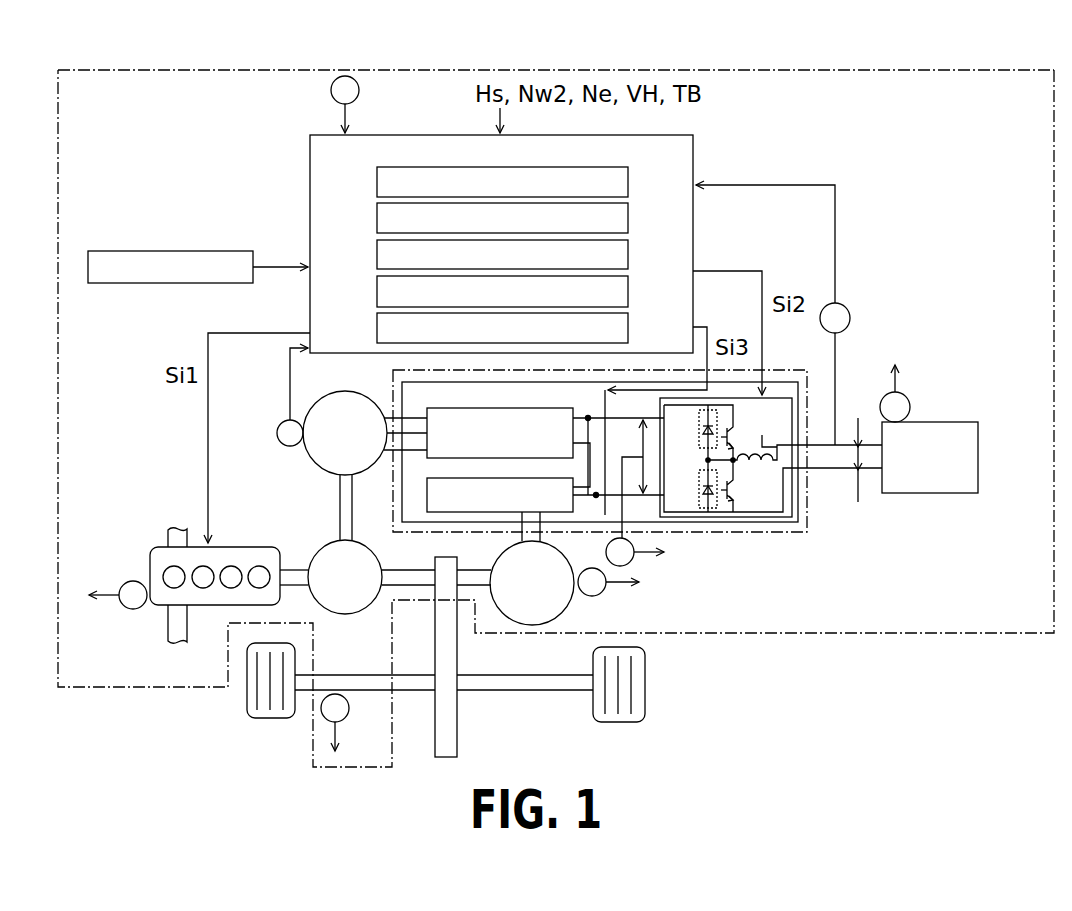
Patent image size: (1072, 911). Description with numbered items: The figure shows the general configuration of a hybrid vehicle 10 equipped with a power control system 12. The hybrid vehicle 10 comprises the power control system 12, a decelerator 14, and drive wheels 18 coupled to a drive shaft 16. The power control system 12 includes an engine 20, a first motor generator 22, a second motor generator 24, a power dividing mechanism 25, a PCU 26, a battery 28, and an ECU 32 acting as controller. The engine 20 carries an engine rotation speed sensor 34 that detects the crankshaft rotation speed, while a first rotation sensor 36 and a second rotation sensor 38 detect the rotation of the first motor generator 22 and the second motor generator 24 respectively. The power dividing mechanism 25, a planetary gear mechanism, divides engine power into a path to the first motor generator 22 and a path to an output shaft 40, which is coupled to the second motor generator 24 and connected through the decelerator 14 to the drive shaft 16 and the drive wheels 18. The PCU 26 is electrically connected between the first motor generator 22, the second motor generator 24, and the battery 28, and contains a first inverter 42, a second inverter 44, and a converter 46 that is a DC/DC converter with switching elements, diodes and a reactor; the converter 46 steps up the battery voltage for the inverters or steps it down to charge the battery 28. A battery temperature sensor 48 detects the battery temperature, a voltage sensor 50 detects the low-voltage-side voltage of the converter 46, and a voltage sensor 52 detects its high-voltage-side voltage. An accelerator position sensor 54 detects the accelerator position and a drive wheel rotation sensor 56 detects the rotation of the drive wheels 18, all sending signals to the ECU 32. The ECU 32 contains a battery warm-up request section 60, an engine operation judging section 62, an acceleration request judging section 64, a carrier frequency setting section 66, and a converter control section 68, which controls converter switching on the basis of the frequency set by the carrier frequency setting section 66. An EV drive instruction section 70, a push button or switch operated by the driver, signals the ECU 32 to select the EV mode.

The hybrid vehicle 10 is at (756, 62).
The power control system 12 is at (636, 68).
The decelerator 14 is at (457, 722).
The drive shaft 16 is at (560, 691).
The drive wheels 18 is at (247, 695).
The engine 20 is at (244, 546).
The first motor generator 22 is at (310, 452).
The second motor generator 24 is at (550, 625).
The power dividing mechanism 25 is at (345, 614).
The PCU 26 is at (812, 510).
The battery 28 is at (978, 455).
The ECU 32 is at (622, 135).
The engine rotation speed sensor 34 is at (125, 581).
The first rotation sensor 36 is at (277, 434).
The second rotation sensor 38 is at (602, 594).
The output shaft 40 is at (412, 571).
The first inverter 42 is at (498, 408).
The second inverter 44 is at (427, 492).
The converter 46 is at (769, 522).
The battery temperature sensor 48 is at (909, 400).
The voltage sensor 50 is at (850, 313).
The voltage sensor 52 is at (632, 563).
The accelerator position sensor 54 is at (359, 90).
The drive wheel rotation sensor 56 is at (323, 717).
The battery warm-up request section 60 is at (377, 181).
The engine operation judging section 62 is at (377, 218).
The acceleration request judging section 64 is at (377, 253).
The carrier frequency setting section 66 is at (377, 291).
The converter control section 68 is at (377, 328).
The EV drive instruction section 70 is at (118, 283).